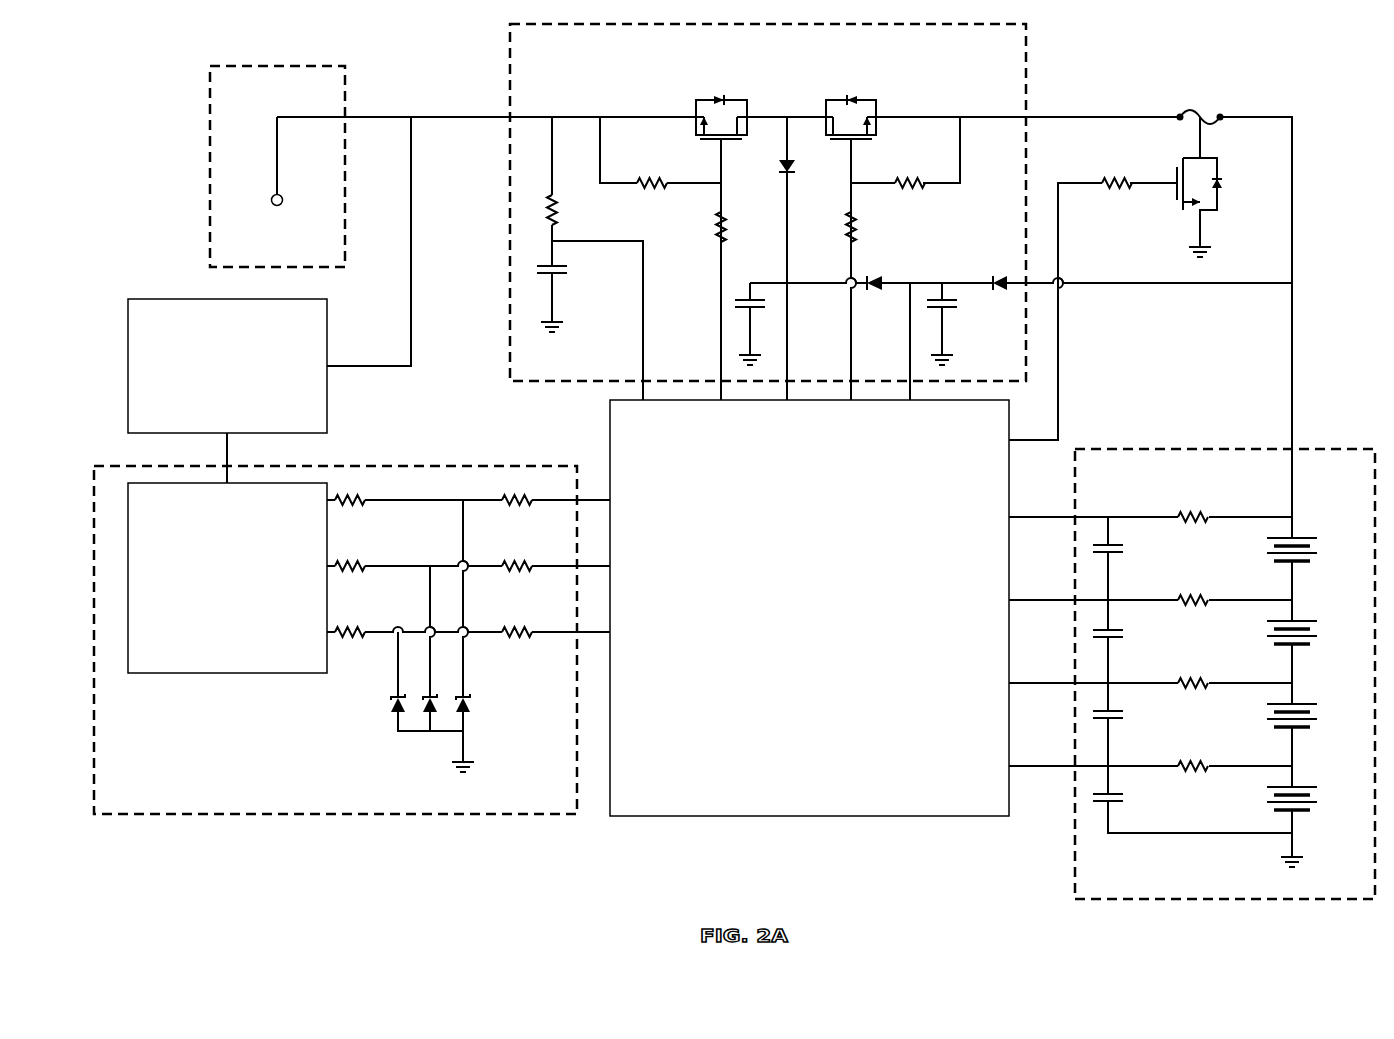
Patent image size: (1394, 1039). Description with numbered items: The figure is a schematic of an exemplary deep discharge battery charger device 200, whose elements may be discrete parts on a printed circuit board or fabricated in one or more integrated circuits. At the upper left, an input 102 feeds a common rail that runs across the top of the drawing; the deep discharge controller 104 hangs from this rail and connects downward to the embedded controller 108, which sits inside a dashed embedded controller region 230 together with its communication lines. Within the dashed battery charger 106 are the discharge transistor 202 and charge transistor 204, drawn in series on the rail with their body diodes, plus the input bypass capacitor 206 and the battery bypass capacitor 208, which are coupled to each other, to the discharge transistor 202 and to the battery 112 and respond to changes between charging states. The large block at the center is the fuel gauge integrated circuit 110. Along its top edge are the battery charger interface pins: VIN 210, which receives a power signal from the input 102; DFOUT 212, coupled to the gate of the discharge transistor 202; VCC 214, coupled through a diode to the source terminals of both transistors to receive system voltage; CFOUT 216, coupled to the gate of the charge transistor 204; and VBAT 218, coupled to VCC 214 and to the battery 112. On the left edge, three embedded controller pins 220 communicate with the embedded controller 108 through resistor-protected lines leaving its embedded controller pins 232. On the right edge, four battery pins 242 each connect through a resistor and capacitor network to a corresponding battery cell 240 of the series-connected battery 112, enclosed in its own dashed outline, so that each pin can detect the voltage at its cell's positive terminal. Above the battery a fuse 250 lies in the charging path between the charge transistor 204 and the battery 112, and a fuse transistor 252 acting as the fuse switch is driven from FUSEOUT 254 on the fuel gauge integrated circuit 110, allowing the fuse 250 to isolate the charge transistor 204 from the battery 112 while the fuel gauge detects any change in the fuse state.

The deep discharge battery charger device 200 is at (1294, 93).
The input 102 is at (229, 93).
The deep discharge controller 104 is at (280, 427).
The battery charger 106 is at (529, 52).
The embedded controller 108 is at (146, 670).
The fuel gauge integrated circuit 110 is at (637, 794).
The battery 112 is at (1096, 477).
The discharge transistor 202 is at (673, 231).
The charge transistor 204 is at (893, 229).
The input bypass capacitor 206 is at (614, 258).
The battery bypass capacitor 208 is at (871, 320).
The first input voltage pin VIN 210 is at (643, 405).
The DFET output pin DFOUT 212 is at (721, 405).
The system voltage pin VCC 214 is at (787, 271).
The CFET output pin CFOUT 216 is at (851, 405).
The battery voltage output pin VBAT 218 is at (910, 354).
The embedded controller pins 220 is at (596, 566).
The embedded controller region 230 is at (114, 801).
The embedded controller pins 232 is at (407, 566).
The battery cell 240 is at (1313, 685).
The battery pins 242 is at (1132, 687).
The fuse 250 is at (1200, 103).
The fuse transistor 252 is at (1222, 187).
The system fuse output pin FUSEOUT 254 is at (1069, 314).